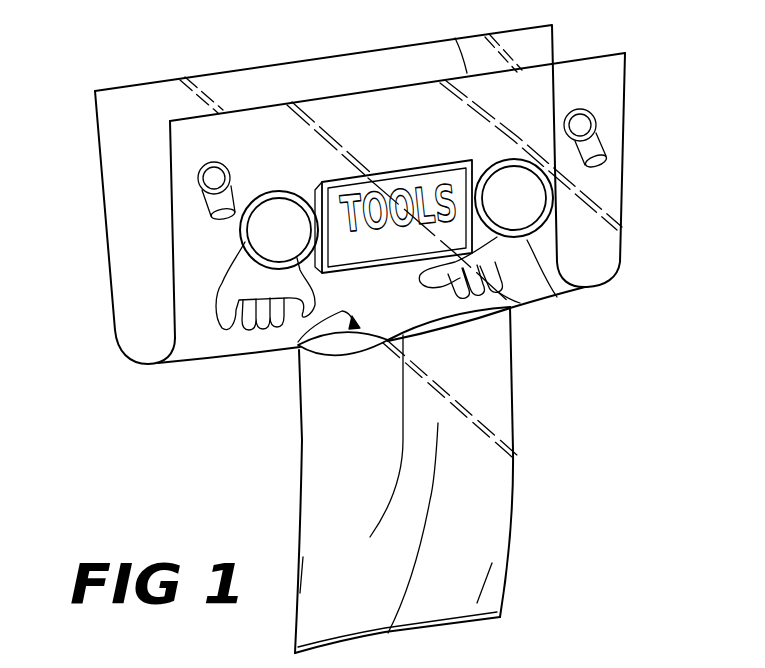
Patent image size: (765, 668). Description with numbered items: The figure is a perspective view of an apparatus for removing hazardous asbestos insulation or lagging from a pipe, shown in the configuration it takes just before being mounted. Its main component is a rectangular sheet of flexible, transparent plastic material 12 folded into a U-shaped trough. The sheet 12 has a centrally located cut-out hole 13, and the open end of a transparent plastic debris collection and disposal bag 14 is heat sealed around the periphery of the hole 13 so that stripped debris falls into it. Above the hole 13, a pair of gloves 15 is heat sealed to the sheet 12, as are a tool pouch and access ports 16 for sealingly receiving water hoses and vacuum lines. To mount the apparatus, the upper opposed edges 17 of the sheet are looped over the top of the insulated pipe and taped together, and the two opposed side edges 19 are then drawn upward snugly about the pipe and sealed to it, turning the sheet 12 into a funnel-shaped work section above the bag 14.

The sheet of flexible, transparent, plastic material 12 is at (140, 228).
The cut-out hole 13 is at (322, 336).
The debris collection and disposal bag 14 is at (513, 386).
The gloves 15 is at (247, 300).
The access ports 16 is at (210, 203).
The upper opposed edges 17 is at (452, 38).
The opposed side edges 19 is at (172, 147).